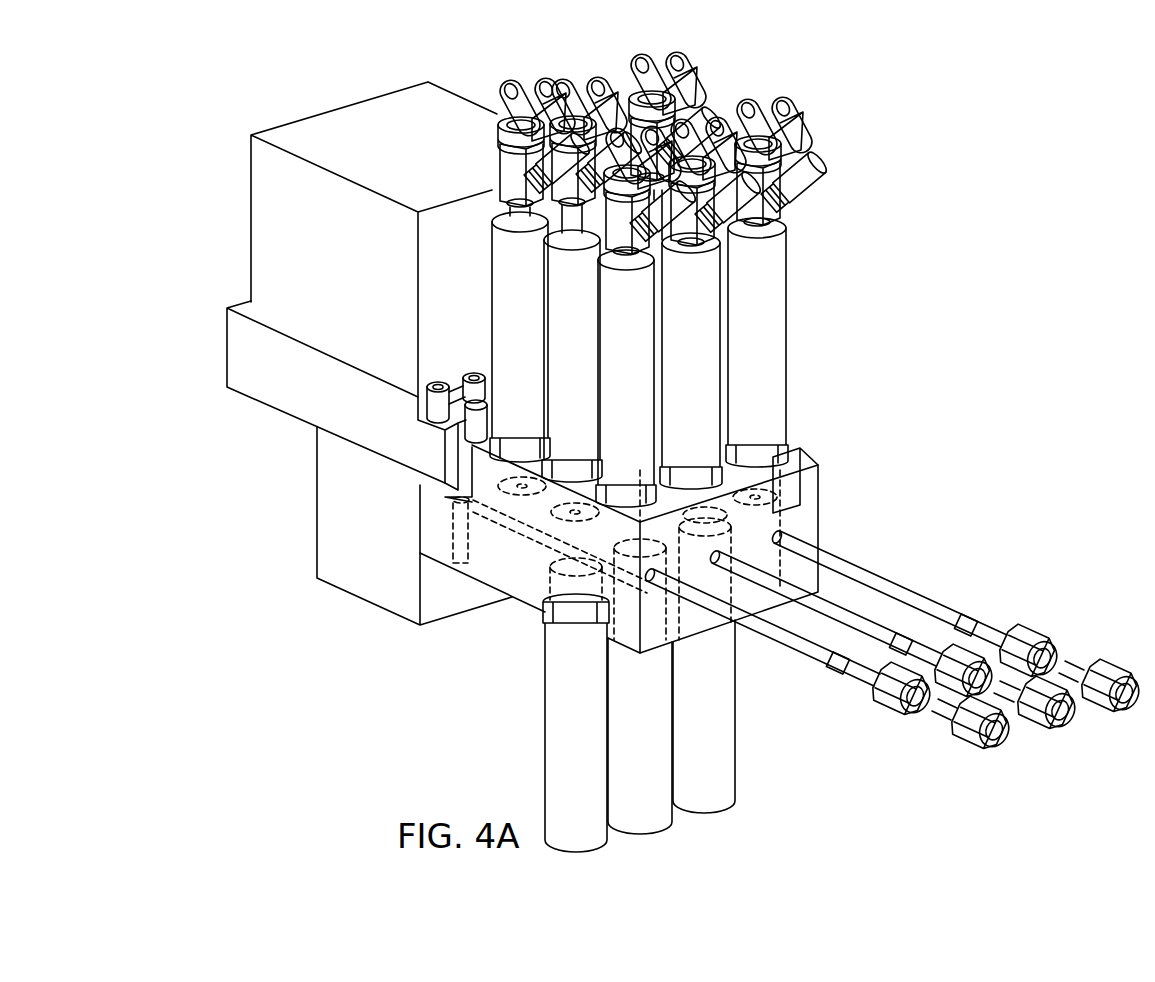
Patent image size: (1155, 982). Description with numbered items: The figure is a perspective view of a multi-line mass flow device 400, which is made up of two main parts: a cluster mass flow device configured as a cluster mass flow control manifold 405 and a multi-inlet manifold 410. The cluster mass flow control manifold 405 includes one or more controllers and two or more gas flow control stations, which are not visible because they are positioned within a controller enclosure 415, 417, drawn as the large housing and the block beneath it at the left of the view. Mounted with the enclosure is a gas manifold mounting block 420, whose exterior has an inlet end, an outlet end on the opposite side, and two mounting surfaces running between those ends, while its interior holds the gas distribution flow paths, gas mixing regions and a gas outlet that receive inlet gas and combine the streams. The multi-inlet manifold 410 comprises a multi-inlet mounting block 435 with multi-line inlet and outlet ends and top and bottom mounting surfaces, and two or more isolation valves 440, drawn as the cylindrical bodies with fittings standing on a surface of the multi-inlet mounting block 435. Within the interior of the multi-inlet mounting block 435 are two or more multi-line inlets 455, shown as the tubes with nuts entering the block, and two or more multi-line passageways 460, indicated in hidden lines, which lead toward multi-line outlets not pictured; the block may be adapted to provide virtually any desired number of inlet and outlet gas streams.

The multi-line mass flow device 400 is at (1040, 220).
The cluster mass flow control manifold 405 is at (273, 124).
The multi-inlet manifold 410 is at (825, 378).
The controller enclosure 415 is at (451, 106).
The controller enclosure 417 is at (317, 502).
The gas manifold mounting block 420 is at (226, 346).
The multi-inlet mounting block 435 is at (822, 500).
The isolation valves 440 is at (790, 247).
The multi-line inlets 455 is at (1028, 636).
The multi-line passageways 460 is at (529, 532).